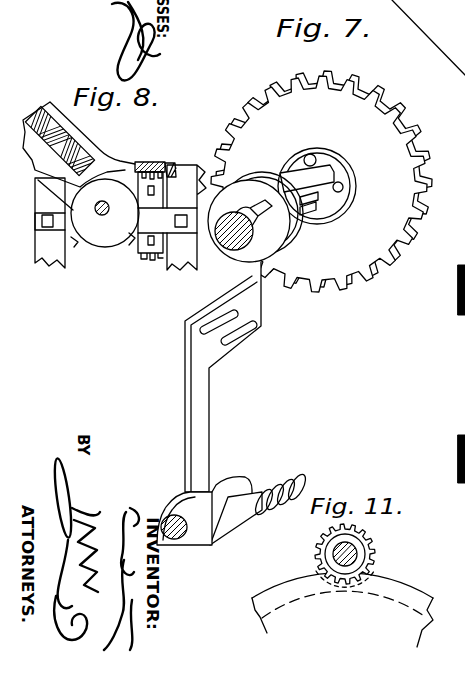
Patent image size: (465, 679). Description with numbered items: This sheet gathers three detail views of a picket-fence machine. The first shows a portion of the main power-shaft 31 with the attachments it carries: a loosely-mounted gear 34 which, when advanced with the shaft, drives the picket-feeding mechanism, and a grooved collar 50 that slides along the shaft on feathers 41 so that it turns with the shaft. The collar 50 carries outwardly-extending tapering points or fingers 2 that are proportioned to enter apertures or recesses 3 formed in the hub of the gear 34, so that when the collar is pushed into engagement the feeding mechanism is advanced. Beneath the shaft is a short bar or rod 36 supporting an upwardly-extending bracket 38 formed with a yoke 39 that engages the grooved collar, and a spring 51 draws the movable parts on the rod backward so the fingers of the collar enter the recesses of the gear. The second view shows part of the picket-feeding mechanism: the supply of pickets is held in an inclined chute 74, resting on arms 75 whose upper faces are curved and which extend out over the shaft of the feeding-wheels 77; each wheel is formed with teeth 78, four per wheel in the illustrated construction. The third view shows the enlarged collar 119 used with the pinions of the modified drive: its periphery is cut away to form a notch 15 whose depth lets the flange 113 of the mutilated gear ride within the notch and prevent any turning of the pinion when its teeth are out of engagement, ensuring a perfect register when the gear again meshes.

In FIG. 7, the tapering points or fingers 2 is at (282, 173).
In FIG. 7, the apertures or recesses 3 is at (309, 155).
In FIG. 11, the notch 15 is at (320, 565).
In FIG. 7, the main power-shaft 31 is at (226, 254).
In FIG. 7, the gear 34 is at (315, 262).
In FIG. 7, the short bar or rod 36 is at (209, 511).
In FIG. 7, the bracket 38 is at (255, 332).
In FIG. 7, the yoke 39 is at (224, 183).
In FIG. 7, the feathers 41 is at (322, 180).
In FIG. 7, the grooved collar 50 is at (249, 221).
In FIG. 7, the spring 51 is at (280, 493).
In FIG. 8, the inclined chute 74 is at (79, 136).
In FIG. 8, the arms 75 is at (118, 165).
In FIG. 8, the feeding-wheels 77 is at (105, 213).
In FIG. 8, the teeth 78 is at (78, 240).
In FIG. 11, the flange 113 is at (417, 598).
In FIG. 11, the collar 119 is at (363, 553).